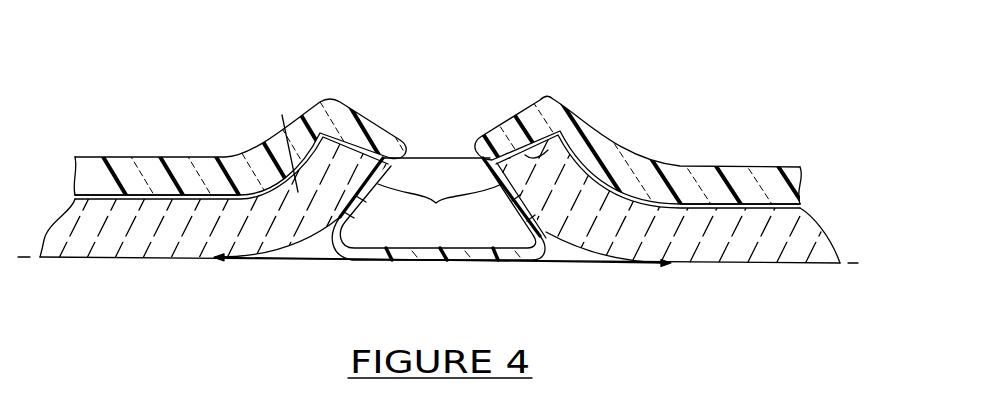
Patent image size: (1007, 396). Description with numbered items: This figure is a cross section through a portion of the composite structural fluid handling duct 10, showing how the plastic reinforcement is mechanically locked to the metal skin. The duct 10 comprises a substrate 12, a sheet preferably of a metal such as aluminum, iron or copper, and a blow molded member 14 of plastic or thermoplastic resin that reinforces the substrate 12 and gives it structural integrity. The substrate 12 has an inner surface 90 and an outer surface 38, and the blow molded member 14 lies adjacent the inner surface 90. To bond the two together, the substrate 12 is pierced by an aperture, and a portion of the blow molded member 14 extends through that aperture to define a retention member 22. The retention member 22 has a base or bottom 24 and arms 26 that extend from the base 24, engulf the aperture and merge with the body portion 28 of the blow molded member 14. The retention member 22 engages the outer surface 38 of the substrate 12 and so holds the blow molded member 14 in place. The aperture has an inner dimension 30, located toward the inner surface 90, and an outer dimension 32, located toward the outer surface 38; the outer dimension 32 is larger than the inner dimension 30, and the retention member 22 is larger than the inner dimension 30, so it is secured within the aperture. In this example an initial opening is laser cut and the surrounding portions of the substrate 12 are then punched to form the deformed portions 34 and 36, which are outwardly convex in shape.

The composite structural fluid handling duct 10 is at (366, 60).
The substrate 12 is at (680, 211).
The blow molded member 14 is at (745, 158).
The retention member 22 is at (439, 193).
The base 24 is at (410, 262).
The arms 26 is at (440, 211).
The body portion 28 is at (176, 157).
The inner dimension 30 is at (436, 157).
The outer dimension 32 is at (290, 263).
The deformed portion 34 is at (363, 135).
The deformed portion 36 is at (570, 145).
The outer surface 38 is at (106, 261).
The inner surface 90 is at (147, 196).